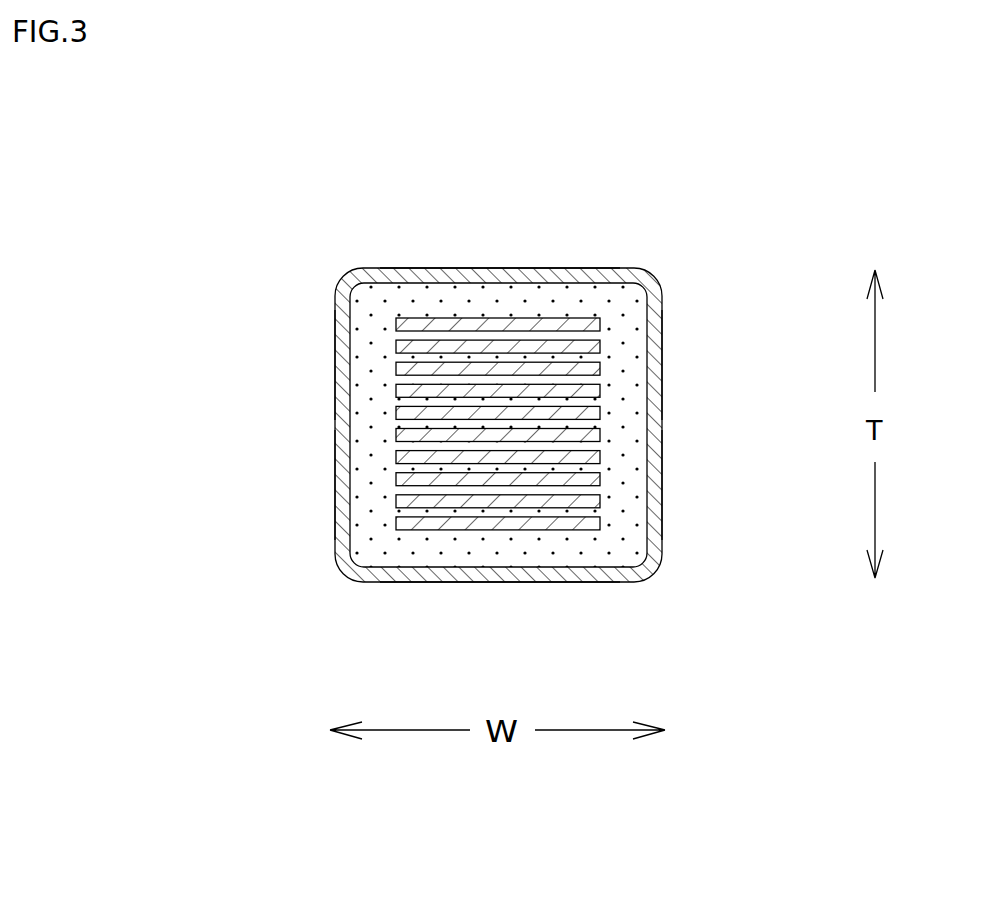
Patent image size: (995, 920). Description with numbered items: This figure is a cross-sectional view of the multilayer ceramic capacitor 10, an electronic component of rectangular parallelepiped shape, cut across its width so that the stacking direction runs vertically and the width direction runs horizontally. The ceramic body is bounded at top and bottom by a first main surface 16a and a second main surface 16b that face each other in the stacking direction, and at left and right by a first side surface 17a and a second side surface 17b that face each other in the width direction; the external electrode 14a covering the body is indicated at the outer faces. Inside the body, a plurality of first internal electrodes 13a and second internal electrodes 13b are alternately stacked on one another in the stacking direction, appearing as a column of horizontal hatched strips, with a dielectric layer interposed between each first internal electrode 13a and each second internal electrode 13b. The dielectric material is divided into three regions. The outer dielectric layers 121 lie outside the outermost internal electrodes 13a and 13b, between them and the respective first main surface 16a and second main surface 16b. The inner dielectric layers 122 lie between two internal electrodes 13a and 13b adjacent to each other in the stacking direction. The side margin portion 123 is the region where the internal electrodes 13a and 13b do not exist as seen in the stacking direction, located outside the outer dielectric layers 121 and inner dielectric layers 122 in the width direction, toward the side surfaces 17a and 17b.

The multilayer ceramic capacitor 10 is at (696, 163).
The outer dielectric layer 121 is at (492, 302).
The inner dielectric layer 122 is at (447, 335).
The side margin portion 123 is at (372, 345).
The first internal electrode 13a is at (580, 364).
The second internal electrode 13b is at (586, 474).
The external electrode 14a is at (335, 460).
The first main surface 16a is at (397, 272).
The second main surface 16b is at (503, 582).
The first side surface 17a is at (335, 373).
The second side surface 17b is at (662, 367).